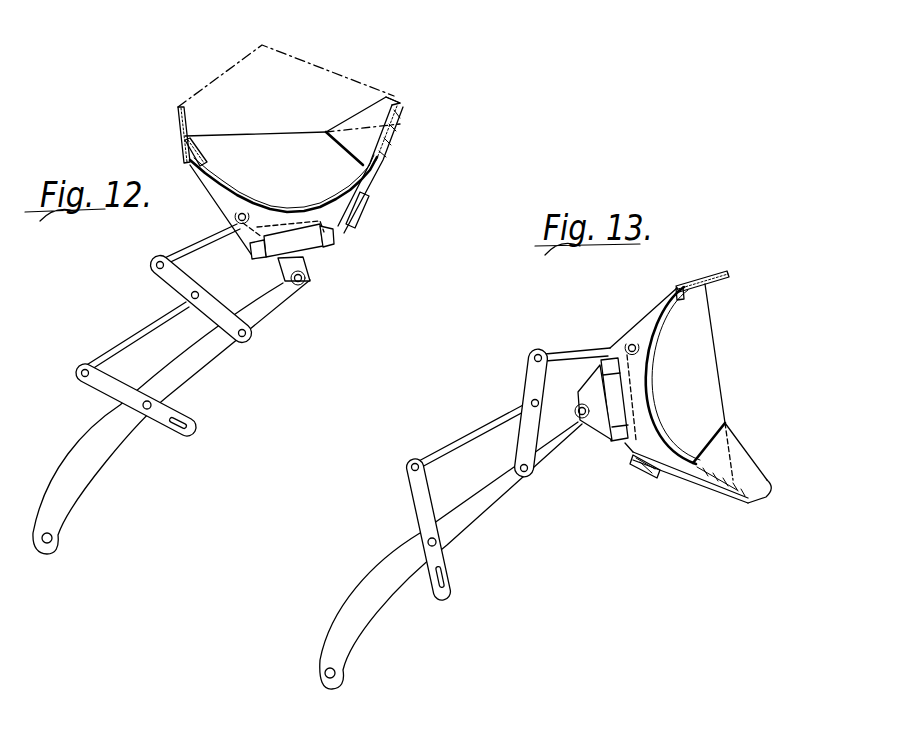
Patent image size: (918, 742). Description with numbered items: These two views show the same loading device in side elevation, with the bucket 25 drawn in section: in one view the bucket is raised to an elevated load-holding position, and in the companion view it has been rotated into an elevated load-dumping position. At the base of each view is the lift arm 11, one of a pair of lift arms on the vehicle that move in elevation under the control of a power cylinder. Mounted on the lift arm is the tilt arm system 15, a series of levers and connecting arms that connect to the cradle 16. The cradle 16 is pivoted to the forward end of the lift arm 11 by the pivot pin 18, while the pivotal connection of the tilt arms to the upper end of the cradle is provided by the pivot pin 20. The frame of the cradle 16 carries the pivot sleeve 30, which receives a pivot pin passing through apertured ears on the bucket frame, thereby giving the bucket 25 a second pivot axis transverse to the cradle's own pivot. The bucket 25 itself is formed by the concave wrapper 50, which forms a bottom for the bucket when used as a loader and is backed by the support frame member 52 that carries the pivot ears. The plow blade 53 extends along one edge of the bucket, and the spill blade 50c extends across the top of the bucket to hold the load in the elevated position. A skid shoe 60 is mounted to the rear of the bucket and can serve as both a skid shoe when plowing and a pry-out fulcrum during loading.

In FIG. 12, the lift arm 11 is at (110, 462).
In FIG. 13, the lift arm 11 is at (470, 528).
In FIG. 12, the tilt arm system 15 is at (124, 326).
In FIG. 13, the tilt arm system 15 is at (490, 424).
In FIG. 12, the cradle 16 is at (349, 238).
In FIG. 13, the cradle 16 is at (600, 447).
In FIG. 12, the pivot pin 18 is at (303, 281).
In FIG. 13, the pivot pin 18 is at (579, 406).
In FIG. 12, the pivot pin 20 is at (238, 226).
In FIG. 13, the pivot pin 20 is at (630, 343).
In FIG. 12, the bucket 25 is at (410, 127).
In FIG. 13, the bucket 25 is at (722, 346).
In FIG. 12, the pivot sleeve 30 is at (306, 245).
In FIG. 13, the pivot sleeve 30 is at (614, 399).
In FIG. 12, the concave wrapper 50 is at (283, 207).
In FIG. 13, the concave wrapper 50 is at (645, 381).
In FIG. 12, the spill blade 50c is at (178, 132).
In FIG. 13, the spill blade 50c is at (745, 256).
In FIG. 12, the support frame member 52 is at (210, 205).
In FIG. 13, the support frame member 52 is at (658, 310).
In FIG. 12, the plow blade 53 is at (399, 103).
In FIG. 13, the plow blade 53 is at (770, 486).
In FIG. 12, the skid shoe 60 is at (363, 216).
In FIG. 13, the skid shoe 60 is at (650, 477).